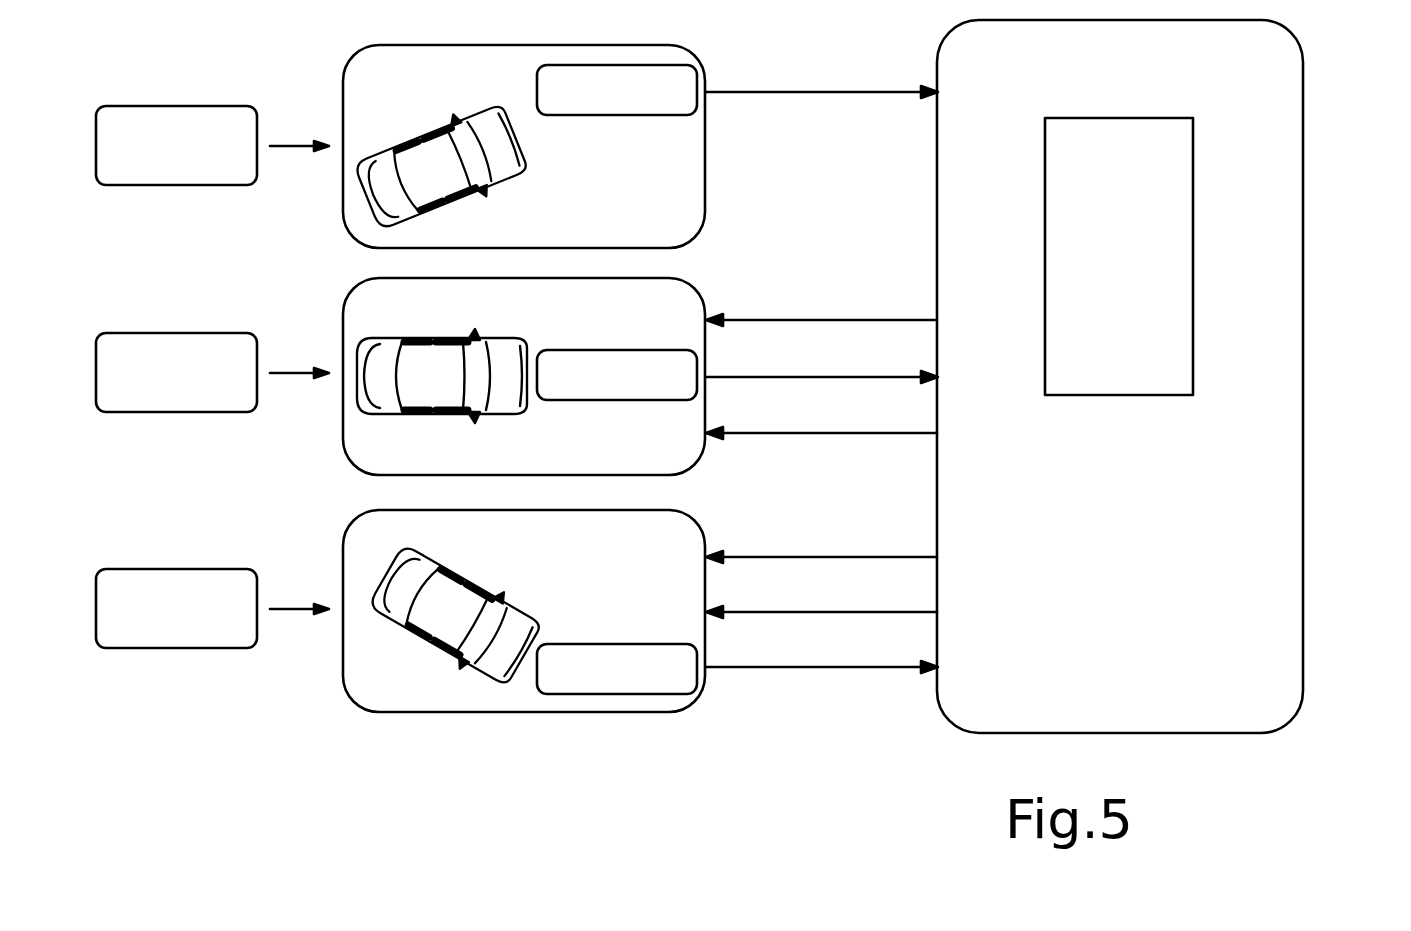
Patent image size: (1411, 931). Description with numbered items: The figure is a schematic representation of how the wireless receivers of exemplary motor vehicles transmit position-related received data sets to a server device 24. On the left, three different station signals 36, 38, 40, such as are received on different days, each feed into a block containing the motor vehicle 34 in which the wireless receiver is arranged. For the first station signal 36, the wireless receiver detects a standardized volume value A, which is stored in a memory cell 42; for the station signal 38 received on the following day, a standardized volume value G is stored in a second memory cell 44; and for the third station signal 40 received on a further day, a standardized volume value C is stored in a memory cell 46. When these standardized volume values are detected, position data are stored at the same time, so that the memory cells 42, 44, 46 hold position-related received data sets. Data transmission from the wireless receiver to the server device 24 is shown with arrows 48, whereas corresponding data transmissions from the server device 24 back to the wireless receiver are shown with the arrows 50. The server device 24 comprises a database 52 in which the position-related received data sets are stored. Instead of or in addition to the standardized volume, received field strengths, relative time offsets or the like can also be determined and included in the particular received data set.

The server device 24 is at (1304, 131).
The motor vehicle 34 is at (409, 146).
The station signal 36 is at (195, 160).
The station signal 38 is at (195, 388).
The station signal 40 is at (195, 623).
The memory cell 42 is at (636, 105).
The second memory cell 44 is at (636, 390).
The memory cell 46 is at (636, 684).
The arrows 48 is at (816, 92).
The arrows 50 is at (816, 320).
The database 52 is at (1195, 257).